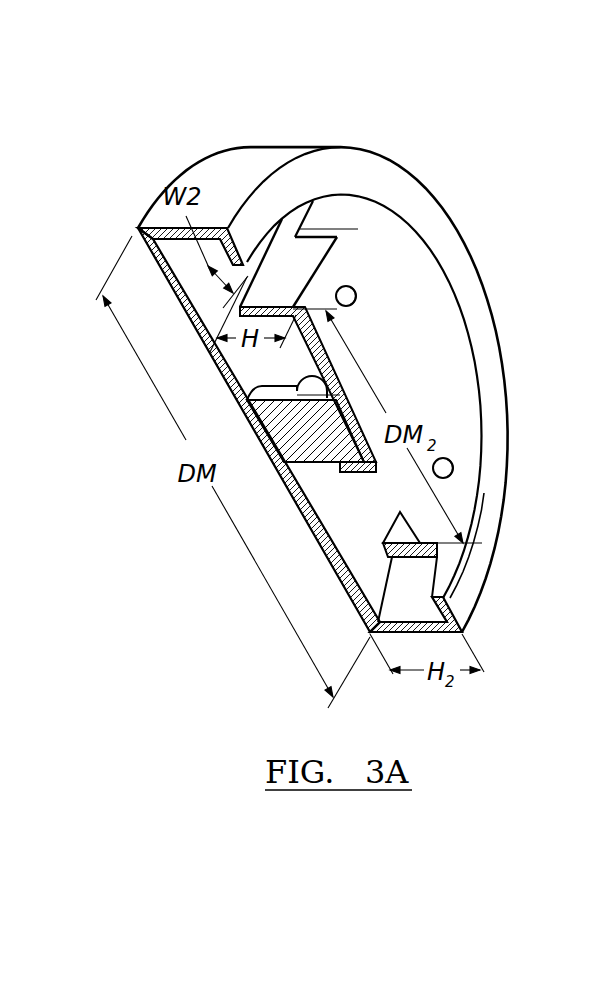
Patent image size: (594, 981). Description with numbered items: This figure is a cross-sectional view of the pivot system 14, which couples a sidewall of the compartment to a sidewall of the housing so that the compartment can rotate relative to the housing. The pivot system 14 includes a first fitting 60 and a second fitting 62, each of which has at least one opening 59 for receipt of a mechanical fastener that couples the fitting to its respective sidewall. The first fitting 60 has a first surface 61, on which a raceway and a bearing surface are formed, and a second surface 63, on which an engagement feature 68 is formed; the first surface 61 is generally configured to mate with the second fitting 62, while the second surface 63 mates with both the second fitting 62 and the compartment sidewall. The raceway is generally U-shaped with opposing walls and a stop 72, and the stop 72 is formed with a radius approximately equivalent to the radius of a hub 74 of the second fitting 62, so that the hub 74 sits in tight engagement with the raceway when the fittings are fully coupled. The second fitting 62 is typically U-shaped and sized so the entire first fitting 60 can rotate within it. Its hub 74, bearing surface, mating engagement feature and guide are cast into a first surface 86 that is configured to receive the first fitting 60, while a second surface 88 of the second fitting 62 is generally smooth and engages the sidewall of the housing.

The pivot system 14 is at (192, 107).
The opening 59 is at (357, 296).
The first fitting 60 is at (318, 203).
The first surface 61 is at (395, 535).
The second fitting 62 is at (448, 648).
The second surface 63 is at (475, 329).
The engagement feature 68 is at (357, 232).
The stop 72 is at (300, 390).
The hub 74 is at (285, 445).
The first surface 86 is at (238, 310).
The second surface 88 is at (365, 612).